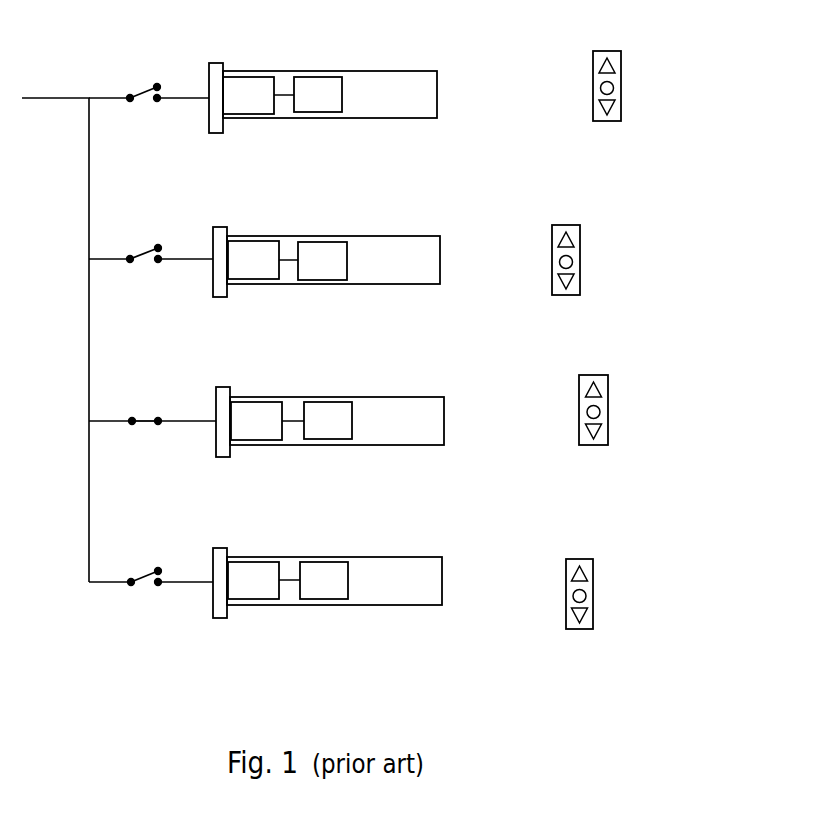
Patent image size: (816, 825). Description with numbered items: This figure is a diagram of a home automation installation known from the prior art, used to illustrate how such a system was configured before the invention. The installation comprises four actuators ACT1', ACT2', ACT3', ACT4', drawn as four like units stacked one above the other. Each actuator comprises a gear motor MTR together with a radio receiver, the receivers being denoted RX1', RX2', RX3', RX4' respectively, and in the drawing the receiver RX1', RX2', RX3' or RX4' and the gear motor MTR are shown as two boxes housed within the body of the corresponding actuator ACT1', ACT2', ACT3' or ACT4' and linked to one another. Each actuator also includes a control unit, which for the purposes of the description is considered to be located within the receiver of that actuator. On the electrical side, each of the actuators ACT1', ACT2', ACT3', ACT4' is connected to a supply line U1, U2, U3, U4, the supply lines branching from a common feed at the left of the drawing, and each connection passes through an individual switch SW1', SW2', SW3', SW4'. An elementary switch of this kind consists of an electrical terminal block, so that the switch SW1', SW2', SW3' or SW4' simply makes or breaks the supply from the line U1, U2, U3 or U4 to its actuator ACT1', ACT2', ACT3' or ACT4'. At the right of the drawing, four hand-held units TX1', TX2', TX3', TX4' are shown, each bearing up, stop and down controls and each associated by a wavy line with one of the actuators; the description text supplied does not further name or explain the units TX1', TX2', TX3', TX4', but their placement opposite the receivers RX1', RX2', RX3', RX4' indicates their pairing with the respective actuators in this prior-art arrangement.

The individual switch SW1' is at (162, 82).
The individual switch SW2' is at (165, 243).
The individual switch SW3' is at (166, 404).
The individual switch SW4' is at (165, 564).
The supply line U1 is at (109, 112).
The supply line U2 is at (109, 275).
The supply line U3 is at (110, 440).
The supply line U4 is at (110, 596).
The radio receiver RX1' is at (260, 67).
The radio receiver RX2' is at (264, 231).
The radio receiver RX3' is at (267, 393).
The radio receiver RX4' is at (267, 552).
The actuator ACT1' is at (331, 70).
The actuator ACT2' is at (342, 240).
The actuator ACT3' is at (350, 397).
The actuator ACT4' is at (340, 560).
The gear motor MTR is at (315, 110).
The transmitter 1 TX1' is at (650, 85).
The transmitter 2 TX2' is at (610, 260).
The transmitter 3 TX3' is at (636, 410).
The transmitter 4 TX4' is at (623, 594).